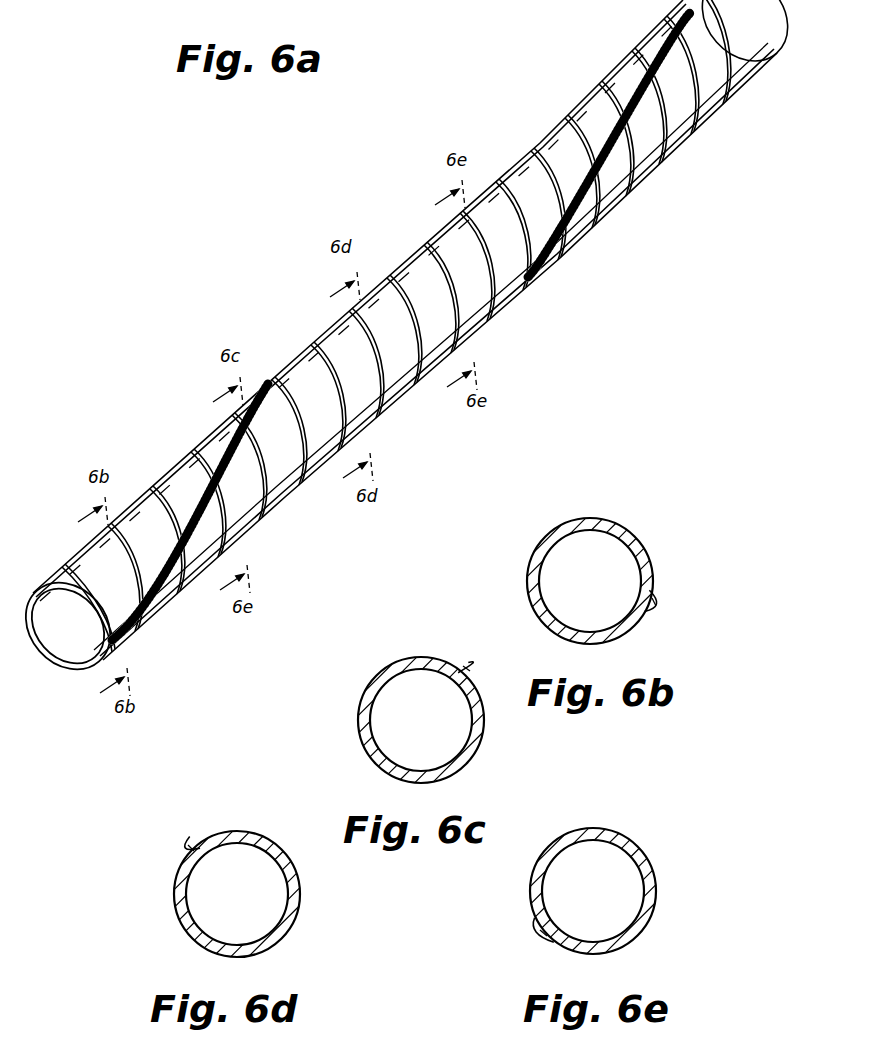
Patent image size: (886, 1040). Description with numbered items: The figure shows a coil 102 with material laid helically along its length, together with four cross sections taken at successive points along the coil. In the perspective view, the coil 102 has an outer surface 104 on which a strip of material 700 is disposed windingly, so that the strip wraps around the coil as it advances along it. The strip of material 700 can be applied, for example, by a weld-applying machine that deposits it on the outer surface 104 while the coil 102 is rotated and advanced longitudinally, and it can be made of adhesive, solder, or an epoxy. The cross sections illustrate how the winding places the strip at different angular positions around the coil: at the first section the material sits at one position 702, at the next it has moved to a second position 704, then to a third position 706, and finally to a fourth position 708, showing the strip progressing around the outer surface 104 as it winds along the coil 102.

In FIG. 6A, the coil 102 is at (58, 640).
In FIG. 6A, the outer surface 104 is at (52, 589).
In FIG. 6A, the strip of material 700 is at (648, 90).
In FIG. 6B, the windingly disposed material position 702 is at (654, 610).
In FIG. 6C, the windingly disposed material position 704 is at (474, 671).
In FIG. 6D, the windingly disposed material position 706 is at (186, 846).
In FIG. 6E, the windingly disposed material position 708 is at (538, 938).